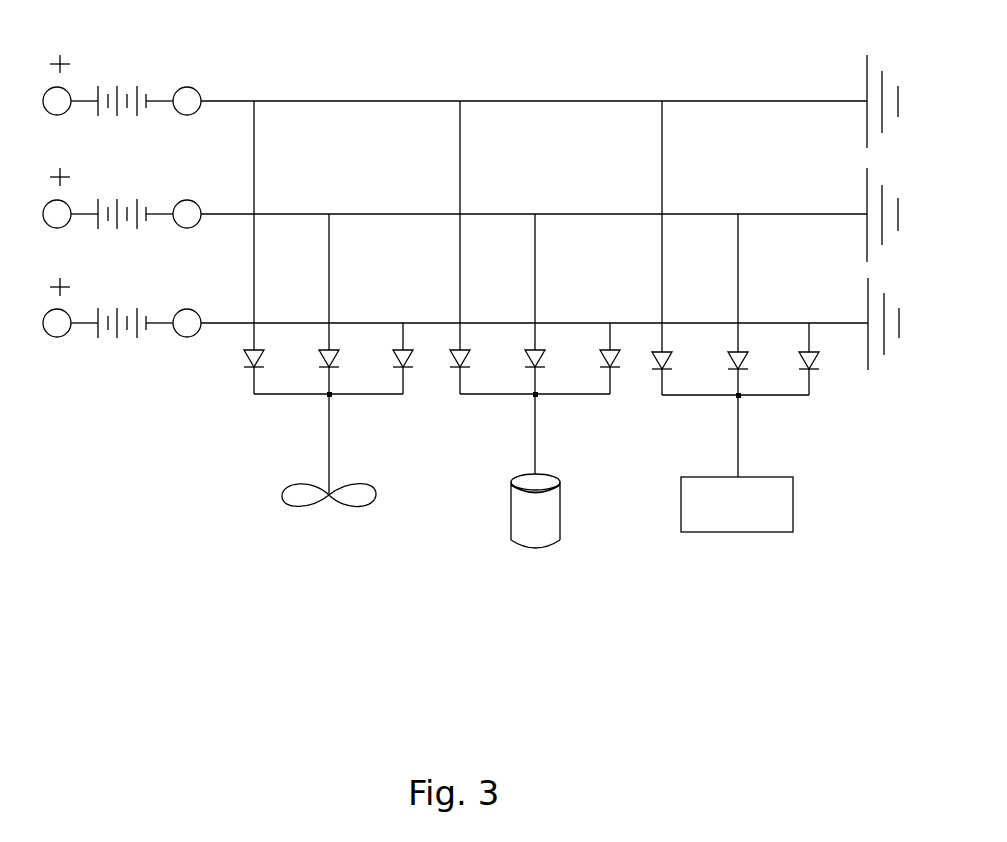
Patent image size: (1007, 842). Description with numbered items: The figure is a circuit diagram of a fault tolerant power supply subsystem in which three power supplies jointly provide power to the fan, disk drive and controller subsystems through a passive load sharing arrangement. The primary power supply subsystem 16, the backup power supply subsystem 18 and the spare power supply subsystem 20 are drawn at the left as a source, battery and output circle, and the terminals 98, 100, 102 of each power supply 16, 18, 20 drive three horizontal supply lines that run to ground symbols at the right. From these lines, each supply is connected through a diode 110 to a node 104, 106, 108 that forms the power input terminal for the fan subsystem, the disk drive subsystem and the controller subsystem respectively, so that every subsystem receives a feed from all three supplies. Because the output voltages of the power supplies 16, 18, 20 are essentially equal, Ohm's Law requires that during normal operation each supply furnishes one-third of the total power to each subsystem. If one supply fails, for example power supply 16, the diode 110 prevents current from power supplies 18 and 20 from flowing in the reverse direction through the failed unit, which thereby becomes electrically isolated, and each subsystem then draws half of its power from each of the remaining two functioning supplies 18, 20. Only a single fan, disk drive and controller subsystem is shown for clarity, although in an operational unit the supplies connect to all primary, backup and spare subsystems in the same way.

The primary power supply subsystem 16 is at (127, 82).
The backup power supply subsystem 18 is at (107, 195).
The spare power supply subsystem 20 is at (107, 307).
The terminal 98 is at (200, 82).
The terminal 100 is at (182, 195).
The terminal 102 is at (182, 307).
The node 104 is at (320, 405).
The node 106 is at (522, 410).
The node 108 is at (727, 412).
The diode 110 is at (230, 342).